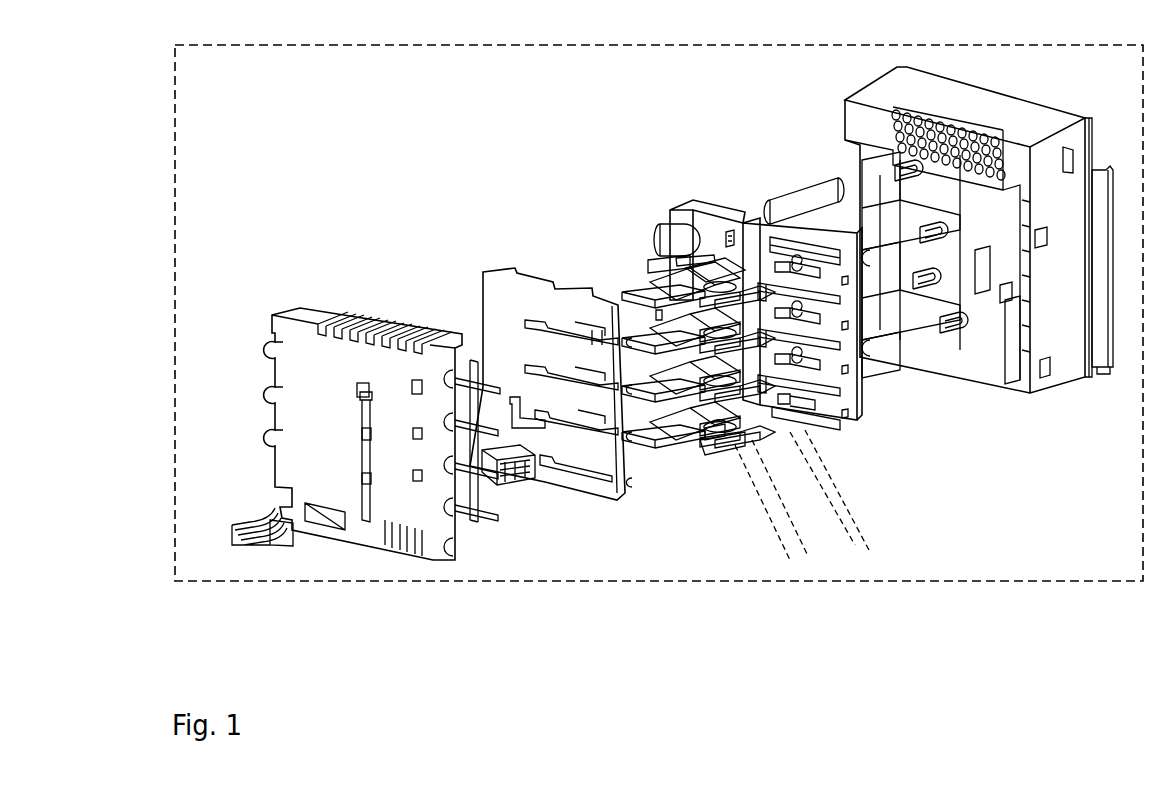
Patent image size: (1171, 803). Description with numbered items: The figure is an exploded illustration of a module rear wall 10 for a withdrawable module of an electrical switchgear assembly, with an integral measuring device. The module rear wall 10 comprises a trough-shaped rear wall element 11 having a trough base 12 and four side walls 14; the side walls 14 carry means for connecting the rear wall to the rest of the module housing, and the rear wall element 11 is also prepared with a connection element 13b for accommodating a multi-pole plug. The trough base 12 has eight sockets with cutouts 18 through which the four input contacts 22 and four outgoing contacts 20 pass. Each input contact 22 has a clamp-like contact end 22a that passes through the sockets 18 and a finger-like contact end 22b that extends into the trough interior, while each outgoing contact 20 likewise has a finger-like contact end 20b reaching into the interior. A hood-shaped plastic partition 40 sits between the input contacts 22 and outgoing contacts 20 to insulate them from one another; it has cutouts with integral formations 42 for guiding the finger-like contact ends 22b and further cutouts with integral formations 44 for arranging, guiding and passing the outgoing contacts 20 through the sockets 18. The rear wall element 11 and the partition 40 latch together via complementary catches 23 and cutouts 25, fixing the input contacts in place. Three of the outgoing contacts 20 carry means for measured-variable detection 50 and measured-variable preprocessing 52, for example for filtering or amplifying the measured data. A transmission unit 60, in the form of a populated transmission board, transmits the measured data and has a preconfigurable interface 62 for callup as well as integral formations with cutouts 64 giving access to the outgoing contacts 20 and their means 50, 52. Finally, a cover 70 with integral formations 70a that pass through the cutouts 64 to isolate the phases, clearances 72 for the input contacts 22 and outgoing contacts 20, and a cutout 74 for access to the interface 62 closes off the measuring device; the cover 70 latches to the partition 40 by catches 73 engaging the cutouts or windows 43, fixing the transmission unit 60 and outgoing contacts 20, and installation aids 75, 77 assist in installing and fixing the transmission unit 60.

The module rear wall 10 is at (787, 581).
The rear wall element 11 is at (1057, 113).
The trough base 12 is at (995, 175).
The connection element 13b is at (913, 117).
The side walls 14 is at (962, 102).
The sockets with cutouts 18 is at (1013, 370).
The outgoing contacts 20 is at (728, 447).
The finger-like contact end 20b is at (663, 320).
The input contacts 22 is at (873, 282).
The clamp-like contact end 22a is at (920, 230).
The finger-like contact end 22b is at (800, 197).
The catches or hooks 23 is at (1045, 370).
The cutouts 25 is at (803, 455).
The plastic partition 40 is at (703, 205).
The cutouts with integral formations 42 is at (668, 234).
The cutouts or windows 43 is at (792, 270).
The cutouts with integral formations 44 is at (845, 428).
The means for measured-variable detection 50 is at (673, 407).
The means for measured-variable preprocessing 52 is at (707, 345).
The transmission unit 60 is at (523, 288).
The preconfigurable interface 62 is at (520, 478).
The integral formations with cutouts 64 is at (602, 335).
The cover 70 is at (307, 317).
The integral formations 70a is at (493, 478).
The clearances 72 is at (286, 452).
The catches 73 is at (367, 402).
The cutout 74 is at (316, 540).
The installation aid 75 is at (657, 252).
The installation aid 77 is at (486, 338).